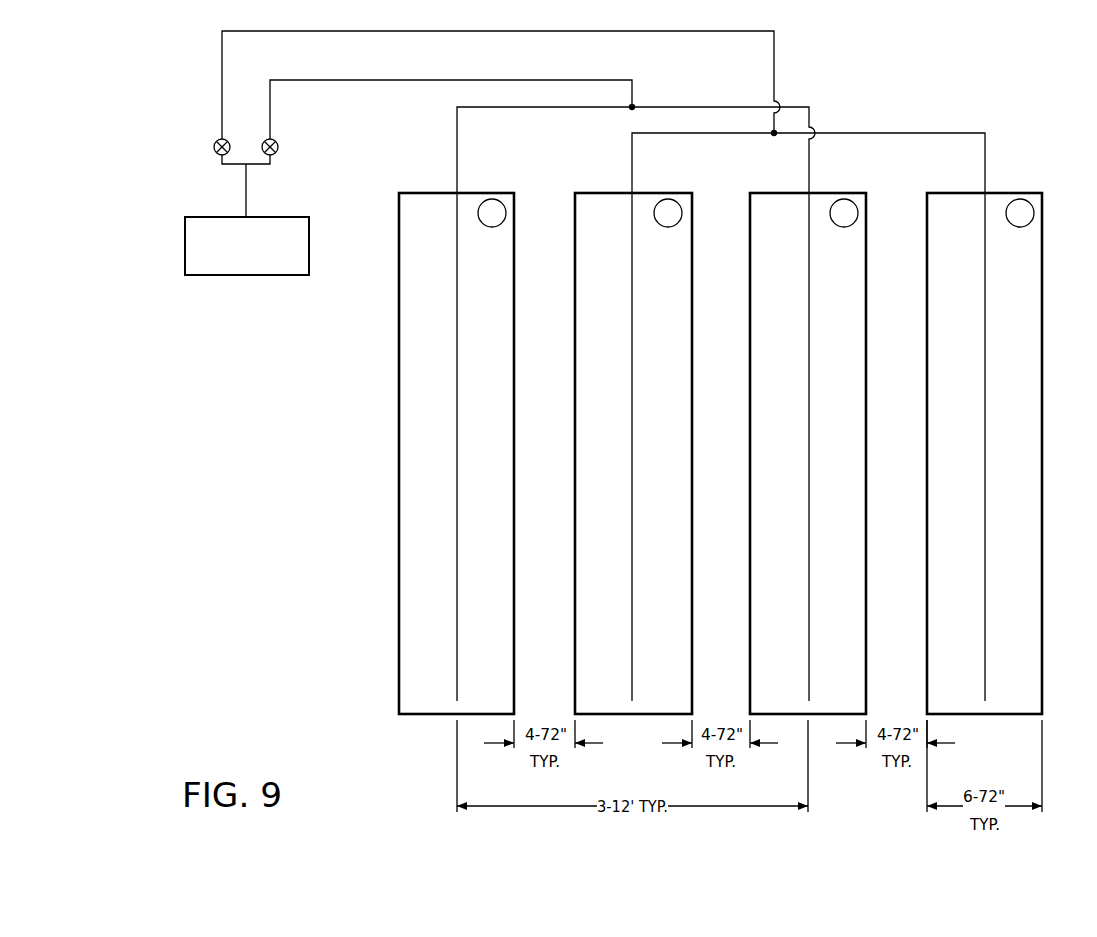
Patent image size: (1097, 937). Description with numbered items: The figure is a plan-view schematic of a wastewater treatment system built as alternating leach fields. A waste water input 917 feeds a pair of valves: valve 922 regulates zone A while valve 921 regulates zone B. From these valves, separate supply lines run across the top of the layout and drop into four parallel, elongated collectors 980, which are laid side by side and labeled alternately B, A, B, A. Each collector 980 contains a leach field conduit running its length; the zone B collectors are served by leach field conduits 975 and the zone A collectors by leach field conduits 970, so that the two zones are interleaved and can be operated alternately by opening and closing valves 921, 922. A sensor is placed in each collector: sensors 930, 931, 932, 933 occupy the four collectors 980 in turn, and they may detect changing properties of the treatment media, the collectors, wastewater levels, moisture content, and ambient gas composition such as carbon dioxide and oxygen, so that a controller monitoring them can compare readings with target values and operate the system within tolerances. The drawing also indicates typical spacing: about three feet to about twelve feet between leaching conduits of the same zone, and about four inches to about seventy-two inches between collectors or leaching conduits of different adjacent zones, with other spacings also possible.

The waste water input 917 is at (250, 276).
The valve 921 is at (273, 139).
The valve 922 is at (218, 139).
The sensor 930 is at (492, 227).
The sensor 931 is at (668, 227).
The sensor 932 is at (844, 227).
The sensor 933 is at (1020, 227).
The leach field conduit 970 is at (632, 182).
The leach field conduit 975 is at (457, 182).
The collector 980 is at (390, 363).